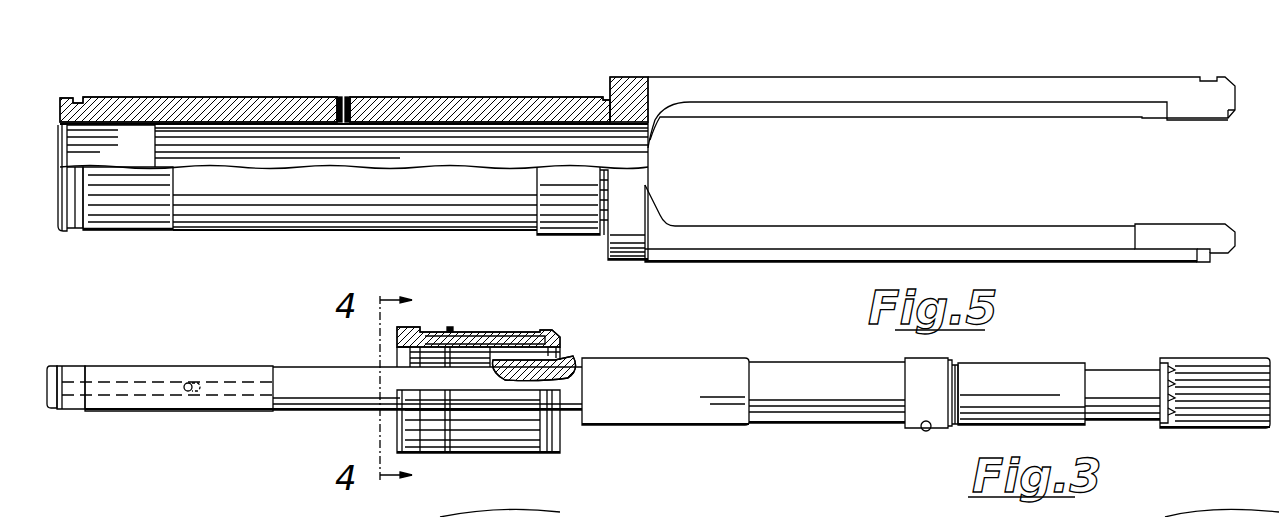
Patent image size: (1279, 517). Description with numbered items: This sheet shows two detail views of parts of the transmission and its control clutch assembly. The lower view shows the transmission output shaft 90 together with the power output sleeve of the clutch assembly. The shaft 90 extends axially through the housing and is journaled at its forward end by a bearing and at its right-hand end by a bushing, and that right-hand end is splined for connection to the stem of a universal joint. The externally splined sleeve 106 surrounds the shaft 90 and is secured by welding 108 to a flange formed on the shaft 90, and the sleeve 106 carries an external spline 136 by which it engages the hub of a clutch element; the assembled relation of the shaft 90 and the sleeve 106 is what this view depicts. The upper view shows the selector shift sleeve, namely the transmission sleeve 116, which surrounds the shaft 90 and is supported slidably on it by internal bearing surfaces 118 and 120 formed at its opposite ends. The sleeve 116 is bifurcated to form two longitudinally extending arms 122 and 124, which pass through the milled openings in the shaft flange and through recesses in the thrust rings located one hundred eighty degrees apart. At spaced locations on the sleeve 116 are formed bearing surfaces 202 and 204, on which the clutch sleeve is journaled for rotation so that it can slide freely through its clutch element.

In FIG. 5, the bearing surface 204 is at (250, 97).
In FIG. 5, the bearing surface 202 is at (546, 97).
In FIG. 5, the transmission sleeve 116 is at (633, 80).
In FIG. 5, the arm 122 is at (890, 80).
In FIG. 5, the arm 124 is at (876, 228).
In FIG. 5, the internal bearing surface 120 is at (1203, 112).
In FIG. 5, the internal bearing surface 118 is at (122, 236).
In FIG. 3, the externally splined sleeve 106 is at (483, 340).
In FIG. 3, the external spline 136 is at (516, 338).
In FIG. 3, the welding 108 is at (557, 353).
In FIG. 3, the transmission output shaft 90 is at (683, 362).